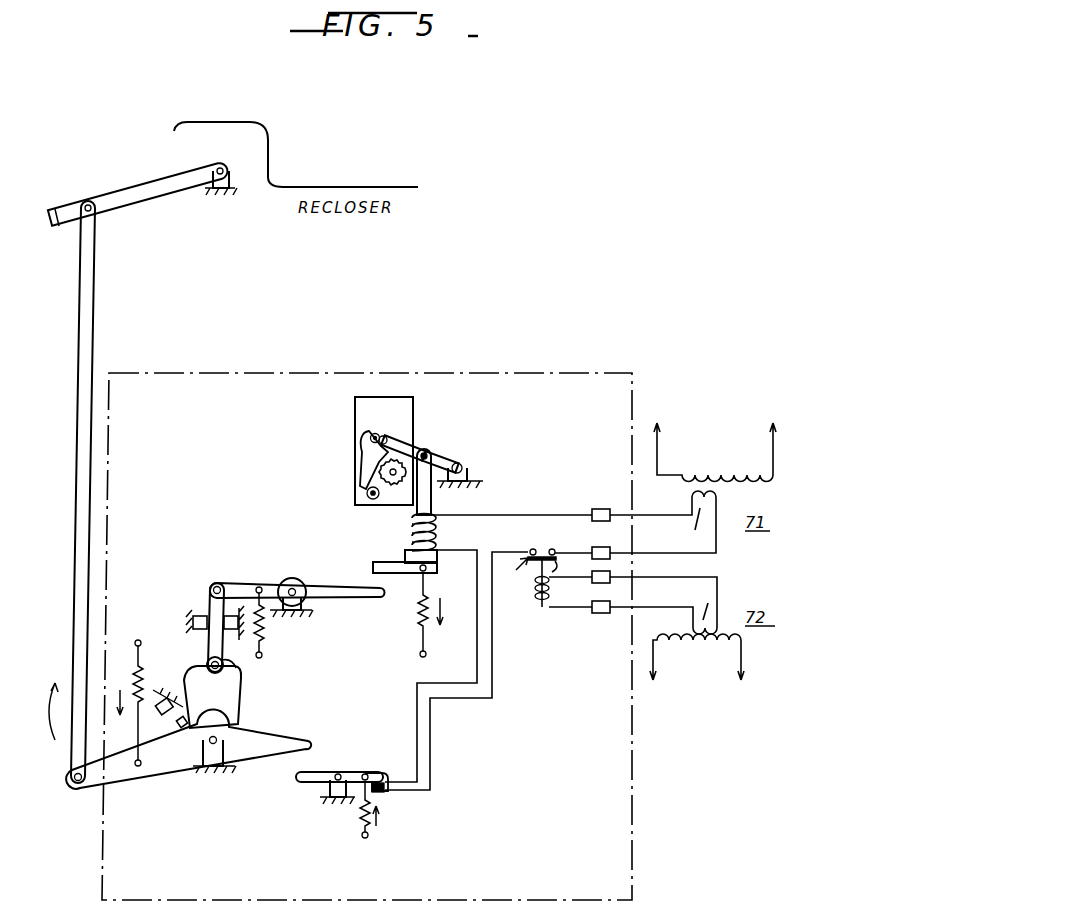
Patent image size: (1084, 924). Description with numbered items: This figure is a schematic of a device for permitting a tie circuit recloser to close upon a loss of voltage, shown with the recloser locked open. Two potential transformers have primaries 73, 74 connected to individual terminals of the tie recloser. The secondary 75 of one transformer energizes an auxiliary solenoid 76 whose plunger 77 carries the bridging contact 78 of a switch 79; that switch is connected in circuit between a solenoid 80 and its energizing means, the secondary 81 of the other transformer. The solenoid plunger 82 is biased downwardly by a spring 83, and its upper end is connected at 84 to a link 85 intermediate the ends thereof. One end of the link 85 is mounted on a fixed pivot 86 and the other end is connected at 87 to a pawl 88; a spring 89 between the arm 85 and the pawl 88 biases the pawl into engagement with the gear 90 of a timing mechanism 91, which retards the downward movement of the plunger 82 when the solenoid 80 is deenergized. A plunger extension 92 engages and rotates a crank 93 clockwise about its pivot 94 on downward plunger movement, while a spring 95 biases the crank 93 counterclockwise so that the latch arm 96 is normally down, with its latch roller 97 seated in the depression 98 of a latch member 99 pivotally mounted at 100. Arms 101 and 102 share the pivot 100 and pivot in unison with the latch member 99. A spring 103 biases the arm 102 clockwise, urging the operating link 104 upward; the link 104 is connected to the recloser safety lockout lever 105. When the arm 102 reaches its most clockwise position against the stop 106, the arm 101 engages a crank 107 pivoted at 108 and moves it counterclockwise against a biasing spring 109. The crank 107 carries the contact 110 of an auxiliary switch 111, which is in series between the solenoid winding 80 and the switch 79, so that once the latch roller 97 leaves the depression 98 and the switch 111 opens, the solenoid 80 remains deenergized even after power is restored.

The primary 73 is at (706, 475).
The primary 74 is at (703, 654).
The secondary 75 is at (698, 605).
The auxiliary solenoid 76 is at (535, 595).
The plunger 77 is at (568, 570).
The bridging contact 78 is at (550, 538).
The switch 79 is at (516, 574).
The solenoid 80 is at (412, 532).
The secondary 81 is at (690, 529).
The solenoid plunger 82 is at (432, 497).
The spring 83 is at (419, 603).
The connection 84 is at (428, 450).
The link 85 is at (446, 462).
The fixed pivot 86 is at (463, 466).
The connection 87 is at (376, 432).
The pawl 88 is at (360, 470).
The spring 89 is at (386, 444).
The gear 90 is at (395, 486).
The timing mechanism 91 is at (345, 427).
The plunger extension 92 is at (396, 566).
The crank 93 is at (330, 596).
The pivot 94 is at (300, 582).
The spring 95 is at (268, 635).
The latch arm 96 is at (210, 592).
The latch roller 97 is at (207, 660).
The depression 98 is at (236, 670).
The latch member 99 is at (211, 699).
The pivot 100 is at (207, 742).
The arm 101 is at (278, 750).
The arm 102 is at (165, 767).
The spring 103 is at (134, 690).
The operating link 104 is at (75, 348).
The recloser safety lockout lever 105 is at (168, 195).
The stop 106 is at (166, 710).
The crank 107 is at (325, 771).
The pivot 108 is at (342, 771).
The biasing spring 109 is at (356, 810).
The contact 110 is at (392, 767).
The auxiliary switch 111 is at (386, 793).